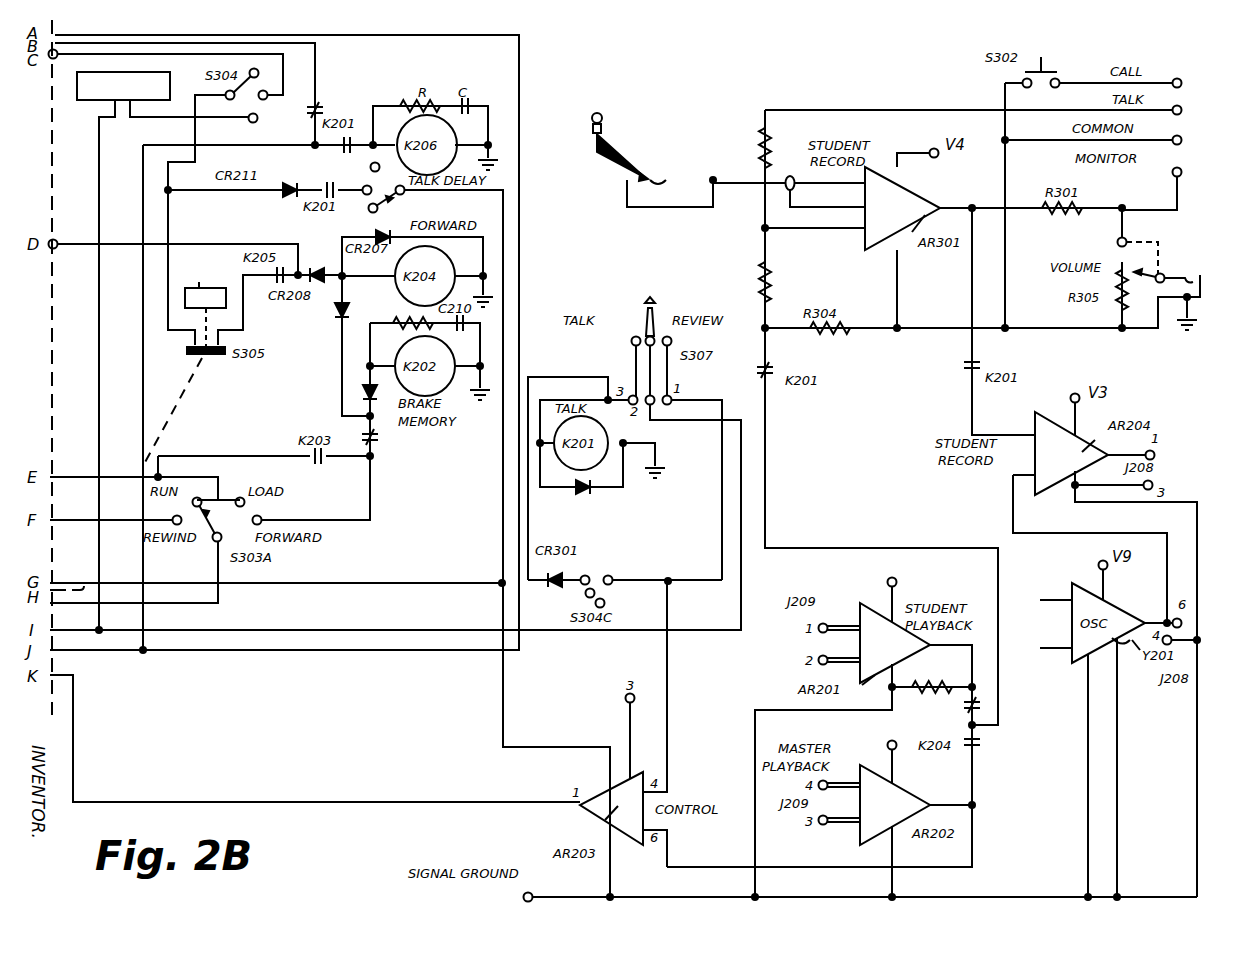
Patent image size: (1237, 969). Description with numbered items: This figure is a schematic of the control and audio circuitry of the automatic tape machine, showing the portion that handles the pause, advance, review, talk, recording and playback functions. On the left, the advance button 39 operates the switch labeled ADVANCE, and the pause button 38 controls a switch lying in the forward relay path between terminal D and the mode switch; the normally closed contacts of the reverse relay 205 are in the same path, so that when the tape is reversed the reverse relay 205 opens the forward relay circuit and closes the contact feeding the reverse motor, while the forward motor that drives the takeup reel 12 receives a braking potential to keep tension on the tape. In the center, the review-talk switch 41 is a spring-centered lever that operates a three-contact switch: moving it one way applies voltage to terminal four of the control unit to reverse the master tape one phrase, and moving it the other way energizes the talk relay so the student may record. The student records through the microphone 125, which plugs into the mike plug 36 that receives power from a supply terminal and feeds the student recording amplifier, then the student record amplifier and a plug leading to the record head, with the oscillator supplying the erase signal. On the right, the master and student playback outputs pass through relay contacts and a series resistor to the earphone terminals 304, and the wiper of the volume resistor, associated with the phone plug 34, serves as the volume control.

The advance button 39 is at (123, 77).
The pause button 38 is at (201, 299).
The reverse relay 205 is at (175, 402).
The microphone 125 is at (604, 118).
The mike plug 36 is at (676, 177).
The review-talk switch 41 is at (655, 303).
The phone plug 34 is at (1180, 265).
The earphone terminals 304 is at (1200, 312).
The takeup reel 12 is at (958, 707).